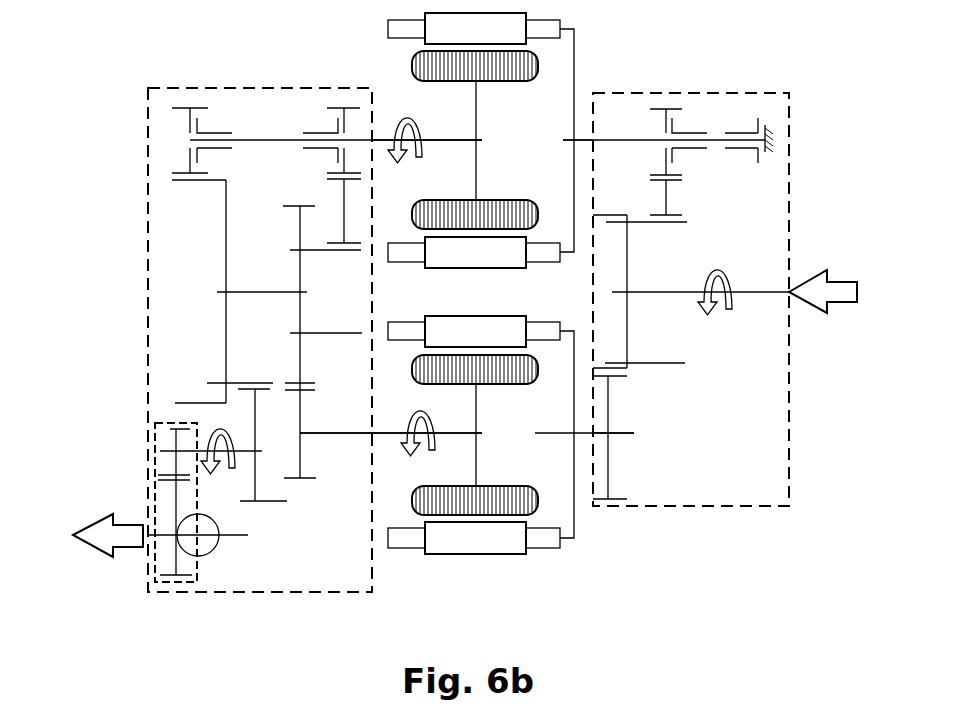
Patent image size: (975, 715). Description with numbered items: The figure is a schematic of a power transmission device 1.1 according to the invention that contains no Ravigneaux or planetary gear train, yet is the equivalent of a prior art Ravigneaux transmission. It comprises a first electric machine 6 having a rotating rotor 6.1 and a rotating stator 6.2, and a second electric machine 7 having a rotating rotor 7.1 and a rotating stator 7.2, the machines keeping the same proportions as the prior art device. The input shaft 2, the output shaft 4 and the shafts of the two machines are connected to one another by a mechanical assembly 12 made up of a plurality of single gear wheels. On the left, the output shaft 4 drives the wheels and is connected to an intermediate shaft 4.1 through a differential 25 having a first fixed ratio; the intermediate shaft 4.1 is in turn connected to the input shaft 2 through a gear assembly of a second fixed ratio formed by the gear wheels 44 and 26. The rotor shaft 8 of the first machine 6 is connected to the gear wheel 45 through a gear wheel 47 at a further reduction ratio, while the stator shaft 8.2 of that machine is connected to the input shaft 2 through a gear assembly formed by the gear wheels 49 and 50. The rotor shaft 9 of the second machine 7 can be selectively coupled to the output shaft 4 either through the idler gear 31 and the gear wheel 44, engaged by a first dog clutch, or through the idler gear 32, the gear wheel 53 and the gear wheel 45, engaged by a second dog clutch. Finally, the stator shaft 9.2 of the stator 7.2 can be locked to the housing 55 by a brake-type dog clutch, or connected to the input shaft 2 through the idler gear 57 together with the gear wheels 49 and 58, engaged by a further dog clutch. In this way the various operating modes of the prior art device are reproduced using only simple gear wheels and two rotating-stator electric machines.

The transmission device 1.1 is at (281, 93).
The input shaft 2 is at (745, 294).
The output shaft 4 is at (162, 549).
The intermediate shaft 4.1 is at (194, 497).
The first electric machine 6 is at (467, 432).
The rotor of first electric machine 6.1 is at (412, 370).
The stator of first electric machine 6.2 is at (577, 523).
The second electric machine 7 is at (477, 139).
The rotor of second electric machine 7.1 is at (411, 68).
The stator of second electric machine 7.2 is at (574, 48).
The rotor shaft 8 is at (400, 438).
The stator shaft 8.2 is at (625, 433).
The rotor shaft 9 is at (446, 145).
The stator shaft 9.2 is at (580, 140).
The mechanical assembly 12 is at (148, 153).
The differential 25 is at (197, 567).
The gear wheel 26 is at (274, 450).
The idler gear 31 is at (190, 118).
The idler gear 32 is at (348, 117).
The gear wheel 44 is at (226, 320).
The gear wheel 45 is at (300, 270).
The gear wheel 47 is at (300, 460).
The gear wheel 49 is at (627, 328).
The gear wheel 50 is at (608, 481).
The gear wheel 53 is at (345, 226).
The housing 55 is at (768, 124).
The idler gear 57 is at (676, 116).
The gear wheel 58 is at (671, 190).